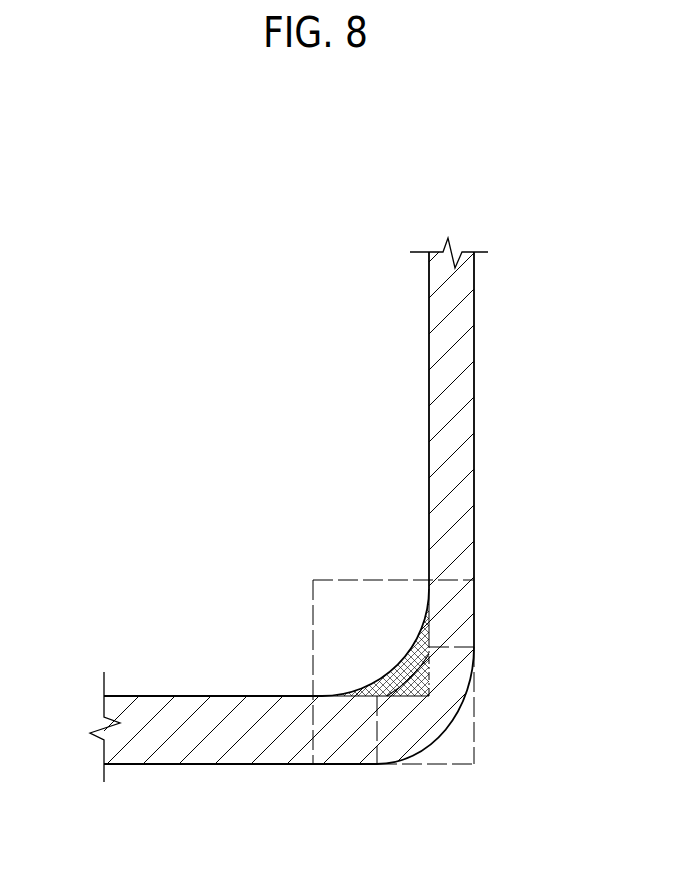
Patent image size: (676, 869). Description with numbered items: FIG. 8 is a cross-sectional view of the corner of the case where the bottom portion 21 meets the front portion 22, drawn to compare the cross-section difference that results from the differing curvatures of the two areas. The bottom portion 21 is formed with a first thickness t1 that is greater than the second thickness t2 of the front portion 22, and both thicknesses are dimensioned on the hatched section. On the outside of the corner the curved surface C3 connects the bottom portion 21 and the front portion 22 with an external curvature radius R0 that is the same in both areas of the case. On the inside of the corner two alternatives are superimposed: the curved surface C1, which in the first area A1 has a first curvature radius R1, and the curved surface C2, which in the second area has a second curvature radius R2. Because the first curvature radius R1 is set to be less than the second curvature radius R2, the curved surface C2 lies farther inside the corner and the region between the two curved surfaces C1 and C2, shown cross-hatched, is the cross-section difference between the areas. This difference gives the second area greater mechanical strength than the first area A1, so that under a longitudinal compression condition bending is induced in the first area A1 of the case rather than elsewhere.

The bottom portion 21 is at (243, 746).
The front portion 22 is at (462, 455).
The first area A1 is at (235, 387).
The curved surface C1 is at (418, 670).
The curved surface C2 is at (403, 652).
The curved surface C3 is at (437, 747).
The external curvature radius R0 is at (410, 738).
The first curvature radius R1 is at (410, 676).
The second curvature radius R2 is at (418, 617).
The first thickness t1 is at (104, 696).
The second thickness t2 is at (474, 250).